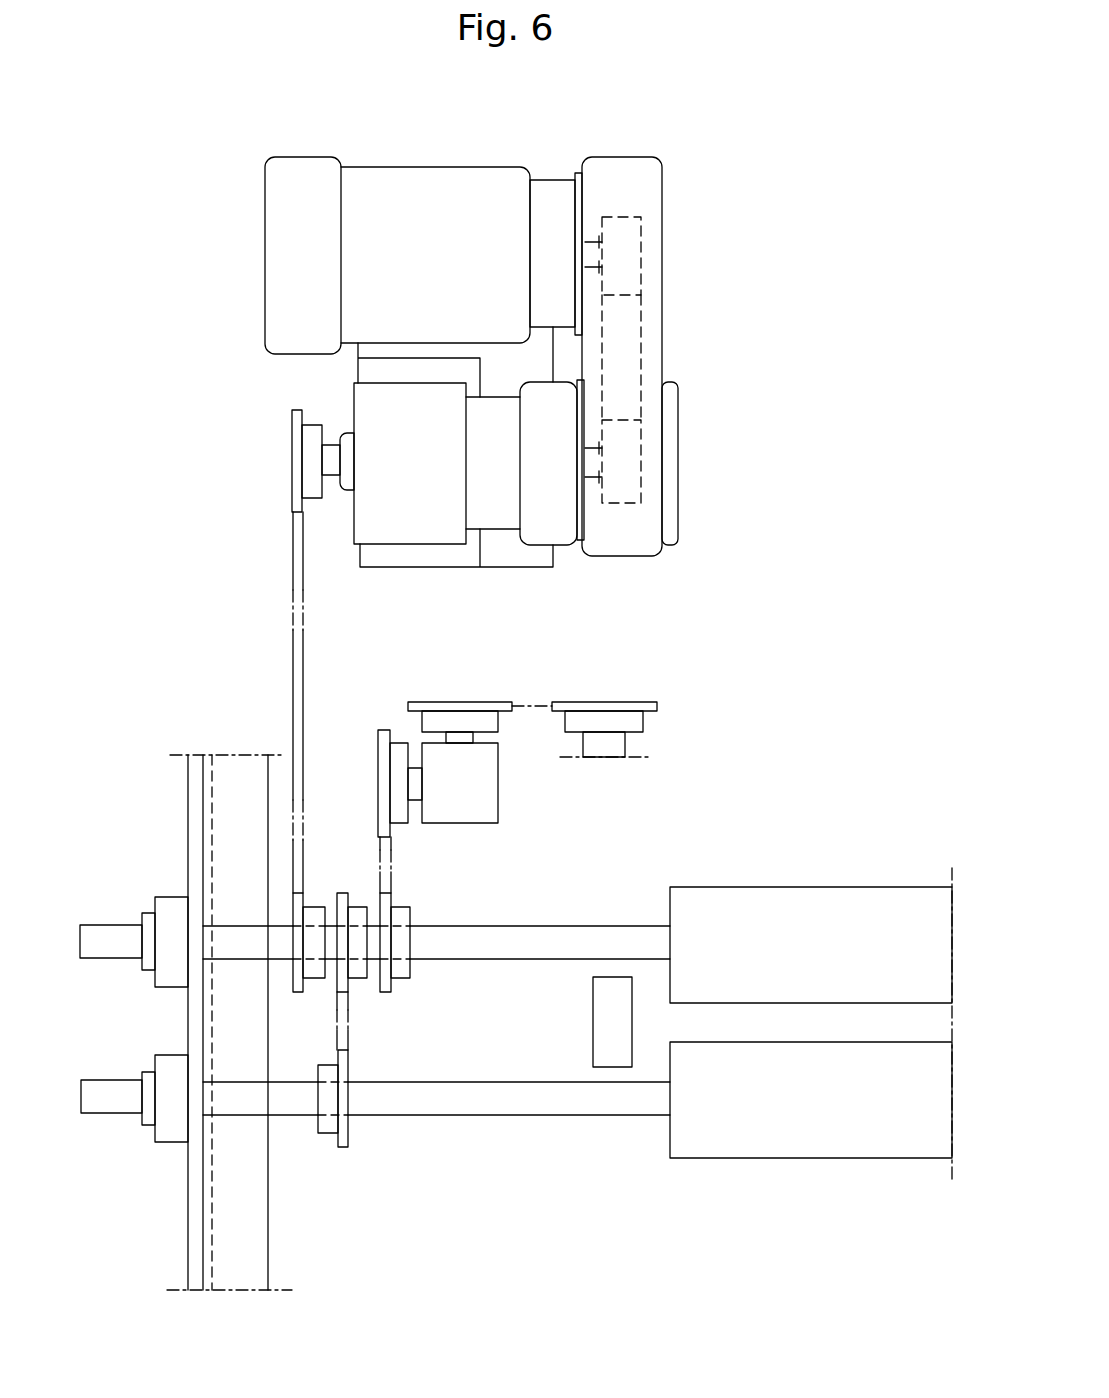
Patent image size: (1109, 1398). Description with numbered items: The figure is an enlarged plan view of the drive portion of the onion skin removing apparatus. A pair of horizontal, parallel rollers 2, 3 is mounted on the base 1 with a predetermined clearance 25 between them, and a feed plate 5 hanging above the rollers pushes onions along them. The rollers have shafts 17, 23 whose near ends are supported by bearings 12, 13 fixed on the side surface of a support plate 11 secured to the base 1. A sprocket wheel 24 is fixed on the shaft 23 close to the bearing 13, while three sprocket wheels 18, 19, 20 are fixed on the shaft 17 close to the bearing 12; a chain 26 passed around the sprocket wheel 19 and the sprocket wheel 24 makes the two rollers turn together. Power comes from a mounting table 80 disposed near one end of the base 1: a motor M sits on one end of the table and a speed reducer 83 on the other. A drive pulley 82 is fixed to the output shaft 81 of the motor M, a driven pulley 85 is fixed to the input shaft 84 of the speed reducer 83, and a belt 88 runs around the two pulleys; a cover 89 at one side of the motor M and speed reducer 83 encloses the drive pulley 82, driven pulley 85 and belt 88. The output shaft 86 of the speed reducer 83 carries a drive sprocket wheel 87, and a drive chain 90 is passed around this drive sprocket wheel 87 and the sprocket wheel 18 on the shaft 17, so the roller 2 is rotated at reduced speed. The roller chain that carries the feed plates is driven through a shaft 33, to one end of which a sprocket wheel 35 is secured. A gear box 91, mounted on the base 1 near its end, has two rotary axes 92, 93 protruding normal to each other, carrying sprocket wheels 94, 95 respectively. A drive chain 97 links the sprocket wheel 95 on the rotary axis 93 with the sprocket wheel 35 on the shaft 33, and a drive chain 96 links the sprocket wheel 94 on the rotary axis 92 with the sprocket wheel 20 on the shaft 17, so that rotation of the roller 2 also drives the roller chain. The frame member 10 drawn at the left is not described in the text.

The motor M is at (428, 178).
The output shaft 81 is at (592, 240).
The cover 89 is at (645, 180).
The drive pulley 82 is at (627, 247).
The belt 88 is at (627, 342).
The mounting table 80 is at (628, 373).
The driven pulley 85 is at (642, 492).
The output shaft 86 is at (333, 453).
The drive sprocket wheel 87 is at (297, 457).
The speed reducer 83 is at (495, 492).
The input shaft 84 is at (592, 470).
The drive chain 90 is at (296, 655).
The sprocket wheel 95 is at (455, 700).
The drive chain 97 is at (522, 703).
The sprocket wheel 35 is at (617, 710).
The shaft 33 is at (617, 748).
The rotary axis 93 is at (447, 740).
The sprocket wheel 94 is at (378, 737).
The gear box 91 is at (498, 798).
The rotary axis 92 is at (413, 790).
The drive chain 96 is at (392, 872).
The frame 10 is at (238, 797).
The sprocket wheel 18 is at (300, 907).
The bearing 12 is at (170, 905).
The sprocket wheel 19 is at (342, 903).
The shaft 17 is at (583, 942).
The roller 2 is at (838, 903).
The sprocket wheel 20 is at (385, 982).
The bearing 13 is at (175, 1135).
The support plate 11 is at (197, 1200).
The base 1 is at (236, 1235).
The chain 26 is at (327, 1044).
The sprocket wheel 24 is at (343, 1118).
The shaft 23 is at (532, 1100).
The feed plate 5 is at (614, 1047).
The roller 3 is at (816, 1110).
The clearance 25 is at (893, 1028).